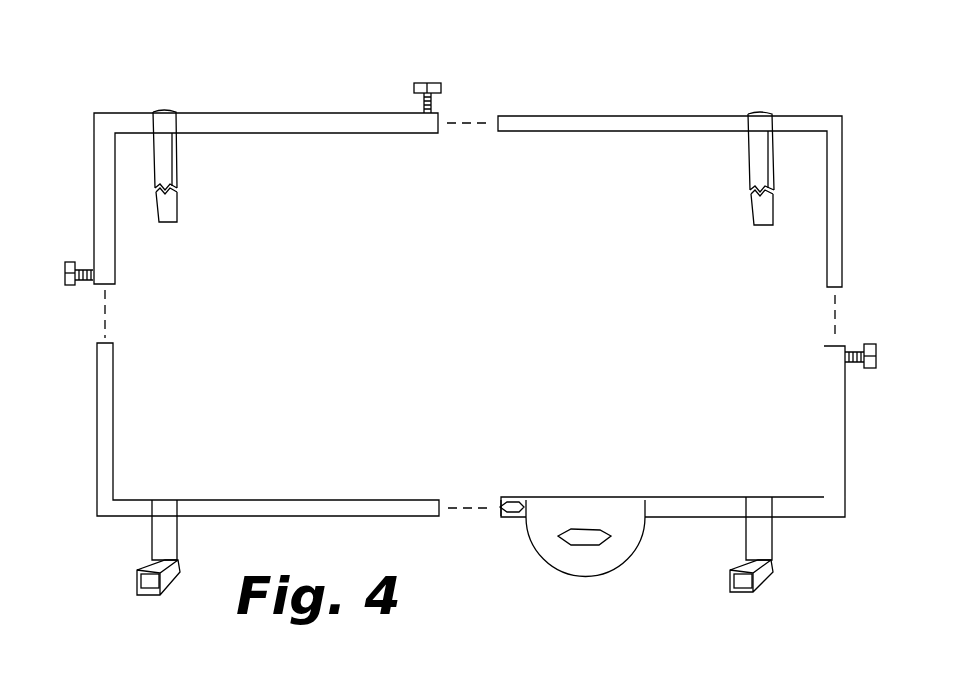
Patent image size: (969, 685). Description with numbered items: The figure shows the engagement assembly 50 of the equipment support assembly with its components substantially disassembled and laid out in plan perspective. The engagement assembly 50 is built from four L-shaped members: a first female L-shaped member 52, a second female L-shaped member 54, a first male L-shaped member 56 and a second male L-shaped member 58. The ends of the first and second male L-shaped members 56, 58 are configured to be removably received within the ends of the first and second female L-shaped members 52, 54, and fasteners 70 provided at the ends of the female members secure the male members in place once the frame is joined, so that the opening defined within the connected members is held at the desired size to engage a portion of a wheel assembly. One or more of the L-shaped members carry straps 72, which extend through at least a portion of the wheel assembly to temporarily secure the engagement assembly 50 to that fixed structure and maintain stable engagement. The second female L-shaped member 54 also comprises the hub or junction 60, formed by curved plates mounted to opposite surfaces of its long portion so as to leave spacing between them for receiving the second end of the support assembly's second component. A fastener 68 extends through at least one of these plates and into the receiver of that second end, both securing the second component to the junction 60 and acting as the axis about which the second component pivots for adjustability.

The engagement assembly 50 is at (66, 78).
The first female L-shaped member 52 is at (312, 113).
The second female L-shaped member 54 is at (806, 505).
The first male L-shaped member 56 is at (103, 472).
The second male L-shaped member 58 is at (808, 114).
The hub or junction 60 is at (546, 578).
The fastener 68 is at (580, 528).
The fasteners 70 is at (432, 83).
The straps 72 is at (166, 152).